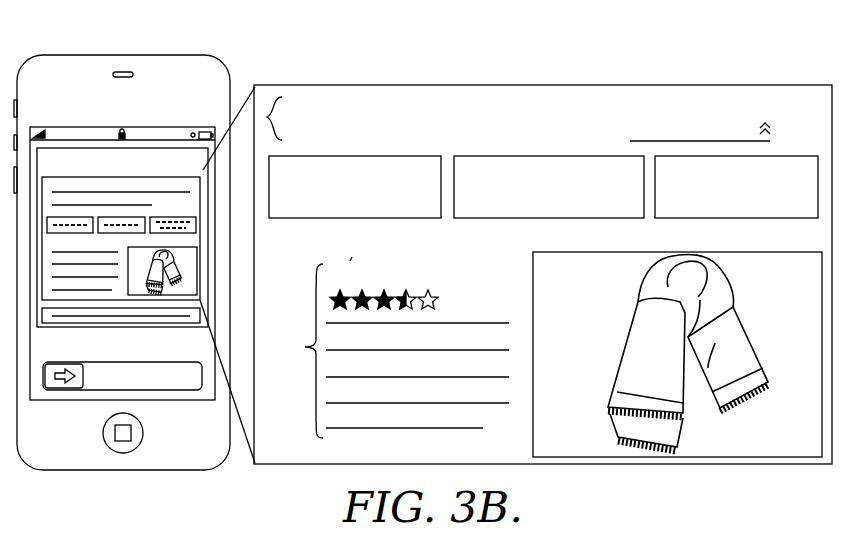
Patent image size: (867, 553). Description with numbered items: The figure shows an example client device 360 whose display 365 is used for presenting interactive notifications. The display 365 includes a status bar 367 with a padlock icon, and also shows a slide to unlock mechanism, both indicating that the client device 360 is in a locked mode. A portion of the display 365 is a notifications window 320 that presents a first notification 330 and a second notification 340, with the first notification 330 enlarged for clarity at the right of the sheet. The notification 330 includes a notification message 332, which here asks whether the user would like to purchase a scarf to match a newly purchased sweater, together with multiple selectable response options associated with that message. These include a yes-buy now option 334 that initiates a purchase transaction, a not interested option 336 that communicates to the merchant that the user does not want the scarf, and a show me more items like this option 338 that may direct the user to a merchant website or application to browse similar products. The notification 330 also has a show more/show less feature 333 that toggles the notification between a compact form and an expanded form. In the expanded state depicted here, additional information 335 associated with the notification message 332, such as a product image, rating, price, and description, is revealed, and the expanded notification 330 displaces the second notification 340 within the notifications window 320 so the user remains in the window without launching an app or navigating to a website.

The client device 360 is at (137, 55).
The notifications window 320 is at (72, 150).
The status bar 367 is at (218, 128).
The first notification 330 is at (200, 263).
The notification message 332 is at (266, 115).
The show more/show less feature 333 is at (763, 124).
The yes-buy now option 334 is at (356, 218).
The not interested option 336 is at (556, 218).
The show me more items like this option 338 is at (730, 218).
The second notification 340 is at (200, 316).
The additional information 335 is at (305, 347).
The display 365 is at (205, 381).